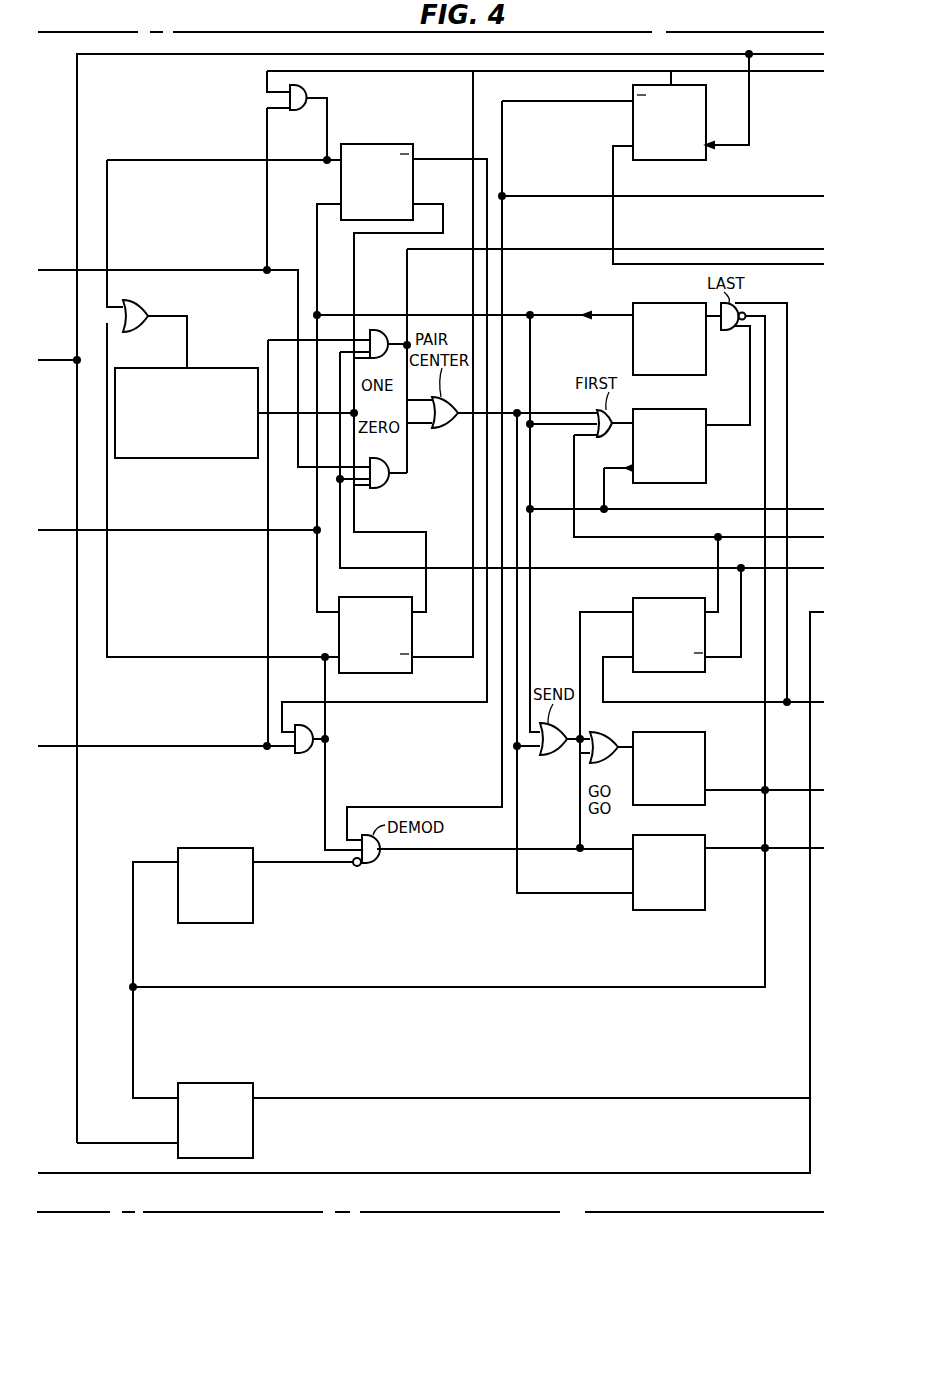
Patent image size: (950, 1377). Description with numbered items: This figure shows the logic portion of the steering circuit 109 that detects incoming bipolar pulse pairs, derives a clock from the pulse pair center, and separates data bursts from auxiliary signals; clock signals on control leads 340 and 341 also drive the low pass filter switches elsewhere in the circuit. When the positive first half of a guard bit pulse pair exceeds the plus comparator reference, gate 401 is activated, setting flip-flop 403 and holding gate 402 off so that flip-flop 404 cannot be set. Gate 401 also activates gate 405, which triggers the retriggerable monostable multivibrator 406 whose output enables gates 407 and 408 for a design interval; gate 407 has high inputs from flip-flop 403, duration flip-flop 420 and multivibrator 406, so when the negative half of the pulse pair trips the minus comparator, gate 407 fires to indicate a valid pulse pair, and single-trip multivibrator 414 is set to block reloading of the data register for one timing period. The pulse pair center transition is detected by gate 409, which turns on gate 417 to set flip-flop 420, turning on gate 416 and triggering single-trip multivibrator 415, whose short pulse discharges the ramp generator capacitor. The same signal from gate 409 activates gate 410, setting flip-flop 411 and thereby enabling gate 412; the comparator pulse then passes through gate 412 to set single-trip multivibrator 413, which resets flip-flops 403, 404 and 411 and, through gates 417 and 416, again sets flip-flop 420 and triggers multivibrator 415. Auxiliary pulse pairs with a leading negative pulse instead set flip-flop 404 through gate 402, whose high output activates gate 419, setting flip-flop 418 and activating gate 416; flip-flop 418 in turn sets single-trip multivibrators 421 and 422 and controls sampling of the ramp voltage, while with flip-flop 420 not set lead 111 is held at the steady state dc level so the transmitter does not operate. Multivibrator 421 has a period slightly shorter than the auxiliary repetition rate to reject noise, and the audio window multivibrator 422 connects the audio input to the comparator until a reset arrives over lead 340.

The steering circuit 109 is at (90, 31).
The lead 111 is at (683, 1172).
The control lead 340 is at (77, 100).
The control lead 341 is at (199, 530).
The gate 401 is at (297, 112).
The gate 402 is at (302, 755).
The flip-flop 403 is at (405, 144).
The flip-flop 404 is at (339, 630).
The gate 405 is at (140, 301).
The retriggerable monostable multivibrator 406 is at (222, 368).
The gate 407 is at (375, 330).
The gate 408 is at (377, 489).
The gate 409 is at (446, 428).
The gate 410 is at (607, 437).
The flip-flop 411 is at (706, 462).
The gate 412 is at (729, 331).
The single-trip multivibrator 413 is at (654, 303).
The single-trip multivibrator 414 is at (633, 123).
The single-trip multivibrator 415 is at (705, 737).
The gate 416 is at (605, 732).
The gate 417 is at (551, 756).
The flip-flop 418 is at (633, 871).
The gate 419 is at (372, 864).
The duration flip-flop 420 is at (636, 598).
The single-trip multivibrator 421 is at (253, 903).
The audio window single-trip multivibrator 422 is at (218, 1083).